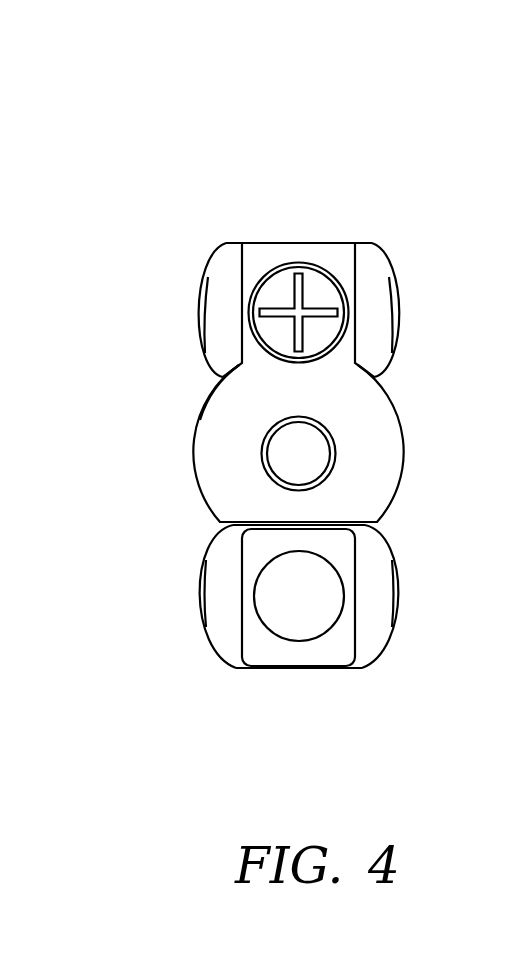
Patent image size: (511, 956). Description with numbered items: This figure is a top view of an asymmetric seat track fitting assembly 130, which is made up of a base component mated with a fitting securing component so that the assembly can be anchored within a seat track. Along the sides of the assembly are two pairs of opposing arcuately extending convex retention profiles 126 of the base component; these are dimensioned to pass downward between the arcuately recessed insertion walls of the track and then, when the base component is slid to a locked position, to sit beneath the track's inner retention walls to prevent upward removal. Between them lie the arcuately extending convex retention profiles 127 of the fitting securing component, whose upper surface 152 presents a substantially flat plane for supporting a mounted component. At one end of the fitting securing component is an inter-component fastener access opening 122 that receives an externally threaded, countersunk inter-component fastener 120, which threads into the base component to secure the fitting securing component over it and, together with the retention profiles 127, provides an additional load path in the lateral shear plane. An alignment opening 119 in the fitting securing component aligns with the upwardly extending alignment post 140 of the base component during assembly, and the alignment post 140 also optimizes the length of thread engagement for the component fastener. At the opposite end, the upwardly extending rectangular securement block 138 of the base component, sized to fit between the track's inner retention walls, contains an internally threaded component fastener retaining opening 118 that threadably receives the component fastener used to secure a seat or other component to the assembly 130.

The asymmetric seat track fitting assembly 130 is at (193, 135).
The arcuately extending convex retention profiles 126 is at (197, 315).
The arcuately extending convex retention profiles 127 is at (192, 447).
The upper surface 152 is at (225, 407).
The inter-component fastener access opening 122 is at (273, 263).
The inter-component fastener 120 is at (318, 287).
The alignment opening 119 is at (337, 450).
The alignment post 140 is at (307, 448).
The securement block 138 is at (333, 651).
The component fastener retaining opening 118 is at (325, 590).